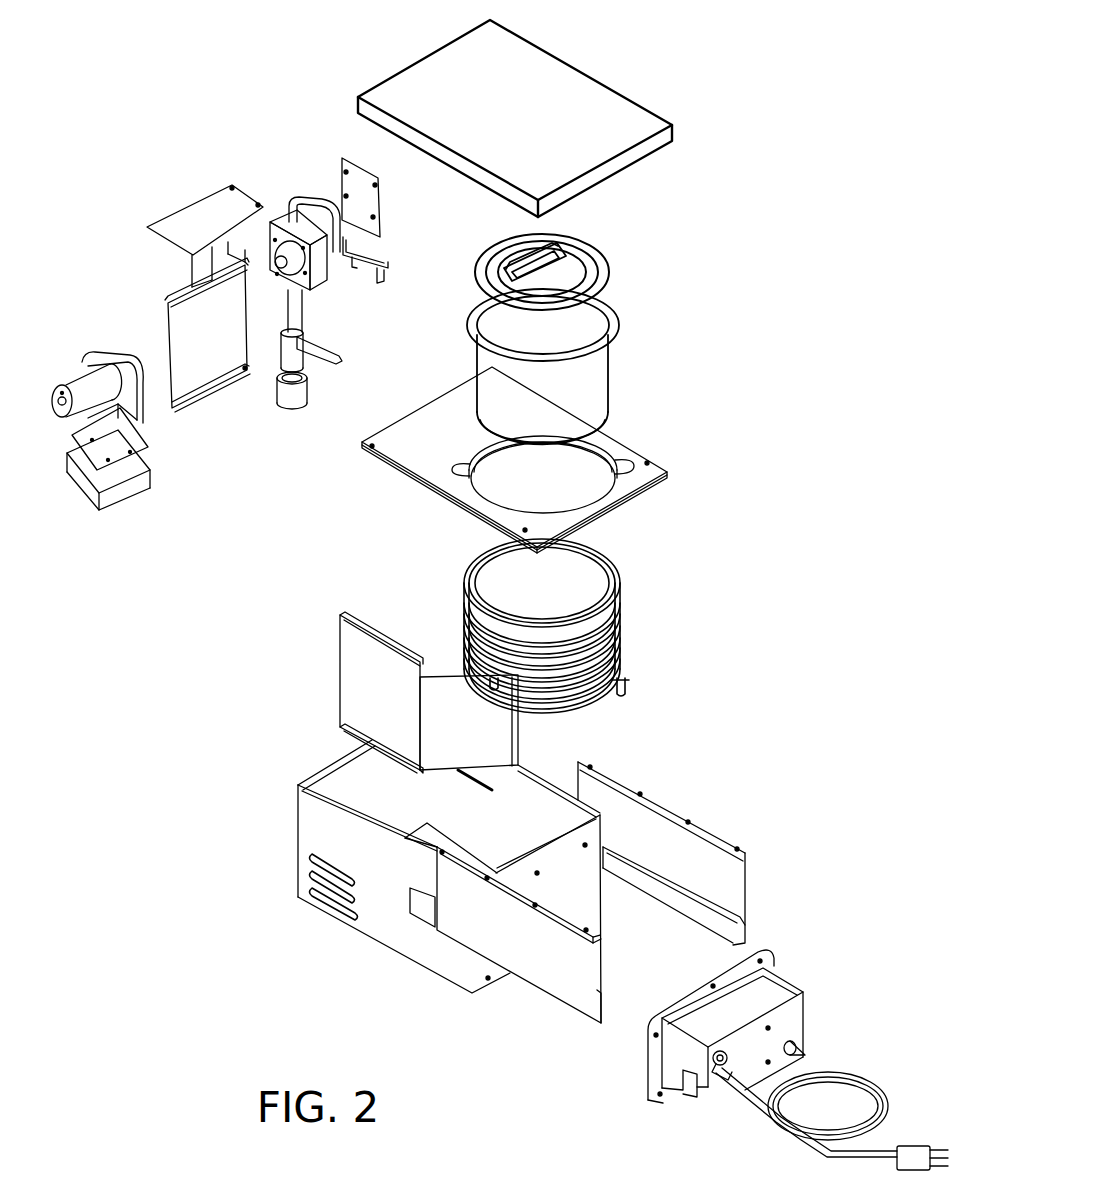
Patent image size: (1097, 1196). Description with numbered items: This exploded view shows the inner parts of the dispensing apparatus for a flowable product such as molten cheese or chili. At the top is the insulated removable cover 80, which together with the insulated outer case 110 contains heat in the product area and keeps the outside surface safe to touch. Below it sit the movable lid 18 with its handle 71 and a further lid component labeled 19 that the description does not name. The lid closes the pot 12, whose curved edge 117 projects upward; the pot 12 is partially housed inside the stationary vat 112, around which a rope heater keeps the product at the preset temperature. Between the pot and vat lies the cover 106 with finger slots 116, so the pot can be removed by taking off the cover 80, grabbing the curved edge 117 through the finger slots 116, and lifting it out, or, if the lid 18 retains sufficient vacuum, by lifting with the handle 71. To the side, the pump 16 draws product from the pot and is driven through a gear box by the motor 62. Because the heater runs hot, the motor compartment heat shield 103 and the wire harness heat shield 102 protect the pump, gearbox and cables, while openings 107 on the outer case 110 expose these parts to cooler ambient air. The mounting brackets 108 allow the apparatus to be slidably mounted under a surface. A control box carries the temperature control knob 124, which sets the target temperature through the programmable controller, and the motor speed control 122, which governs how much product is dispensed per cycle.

The insulated removable cover 80 is at (599, 104).
The lid 19 is at (611, 262).
The handle 71 is at (556, 246).
The movable lid 18 is at (516, 279).
The curved edge 117 is at (619, 305).
The pot 12 is at (615, 382).
The cover 106 is at (629, 506).
The finger slots 116 is at (624, 462).
The stationary vat 112 is at (624, 628).
The wire harness heat shield 102 is at (339, 694).
The insulated outer case 110 is at (307, 828).
The openings 107 is at (319, 904).
The mounting brackets 108 is at (667, 803).
The temperature control knob 124 is at (804, 1041).
The motor speed control 122 is at (722, 1068).
The motor compartment heat shield 103 is at (210, 405).
The pump 16 is at (281, 217).
The motor 62 is at (72, 377).